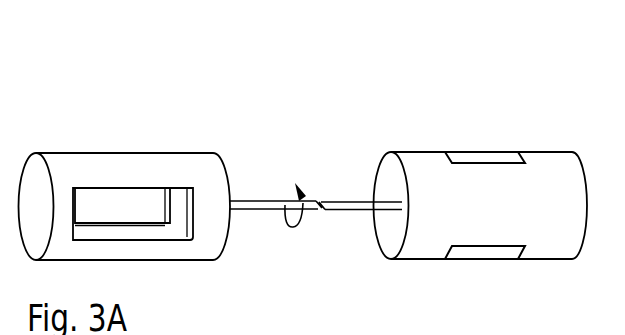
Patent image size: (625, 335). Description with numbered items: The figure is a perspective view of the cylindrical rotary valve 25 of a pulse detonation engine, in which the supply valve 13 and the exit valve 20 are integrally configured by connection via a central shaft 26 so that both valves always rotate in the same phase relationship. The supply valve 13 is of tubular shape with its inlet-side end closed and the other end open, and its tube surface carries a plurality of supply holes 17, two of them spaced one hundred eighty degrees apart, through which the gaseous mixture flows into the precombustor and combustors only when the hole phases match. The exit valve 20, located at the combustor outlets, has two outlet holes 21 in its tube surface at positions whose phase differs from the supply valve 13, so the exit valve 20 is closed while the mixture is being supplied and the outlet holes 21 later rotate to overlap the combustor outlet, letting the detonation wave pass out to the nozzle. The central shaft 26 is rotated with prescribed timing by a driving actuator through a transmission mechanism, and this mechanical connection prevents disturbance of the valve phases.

The supply valve 13 is at (180, 153).
The supply hole 17 is at (110, 200).
The exit valve 20 is at (552, 148).
The outlet hole 21 is at (480, 157).
The cylindrical rotary valve 25 is at (280, 152).
The central shaft 26 is at (347, 205).